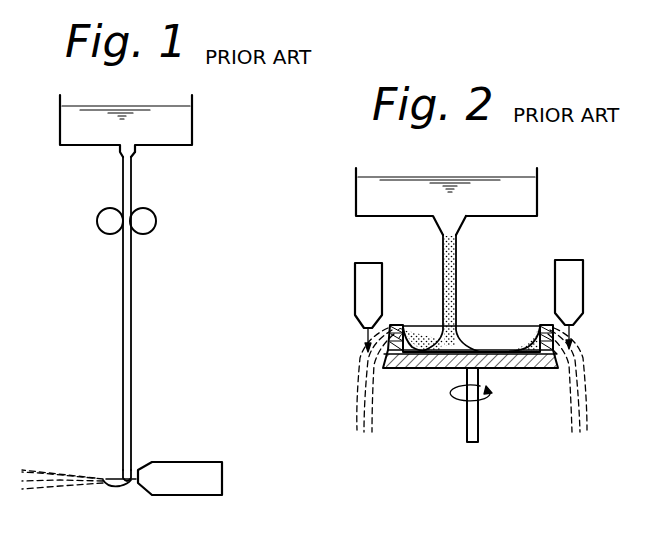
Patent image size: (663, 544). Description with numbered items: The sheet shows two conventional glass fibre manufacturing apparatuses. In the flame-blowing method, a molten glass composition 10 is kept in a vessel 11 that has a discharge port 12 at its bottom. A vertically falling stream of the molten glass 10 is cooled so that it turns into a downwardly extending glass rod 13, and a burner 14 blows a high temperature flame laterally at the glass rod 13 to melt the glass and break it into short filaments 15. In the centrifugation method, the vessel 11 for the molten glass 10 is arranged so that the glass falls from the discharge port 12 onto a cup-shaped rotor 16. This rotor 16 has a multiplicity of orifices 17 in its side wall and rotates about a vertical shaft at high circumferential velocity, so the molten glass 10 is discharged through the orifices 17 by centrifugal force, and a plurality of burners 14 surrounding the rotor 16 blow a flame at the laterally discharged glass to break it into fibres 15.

In FIG. 1, the molten glass composition 10 is at (170, 117).
In FIG. 2, the molten glass composition 10 is at (505, 178).
In FIG. 1, the vessel 11 is at (193, 122).
In FIG. 2, the vessel 11 is at (538, 190).
In FIG. 1, the discharge port 12 is at (134, 156).
In FIG. 2, the discharge port 12 is at (462, 222).
In FIG. 1, the glass rod 13 is at (132, 272).
In FIG. 1, the burner 14 is at (172, 462).
In FIG. 2, the burner 14 is at (354, 290).
In FIG. 1, the short filaments 15 is at (34, 472).
In FIG. 2, the short filaments 15 is at (380, 414).
In FIG. 2, the cup-shaped rotor 16 is at (517, 370).
In FIG. 2, the orifices 17 is at (391, 328).